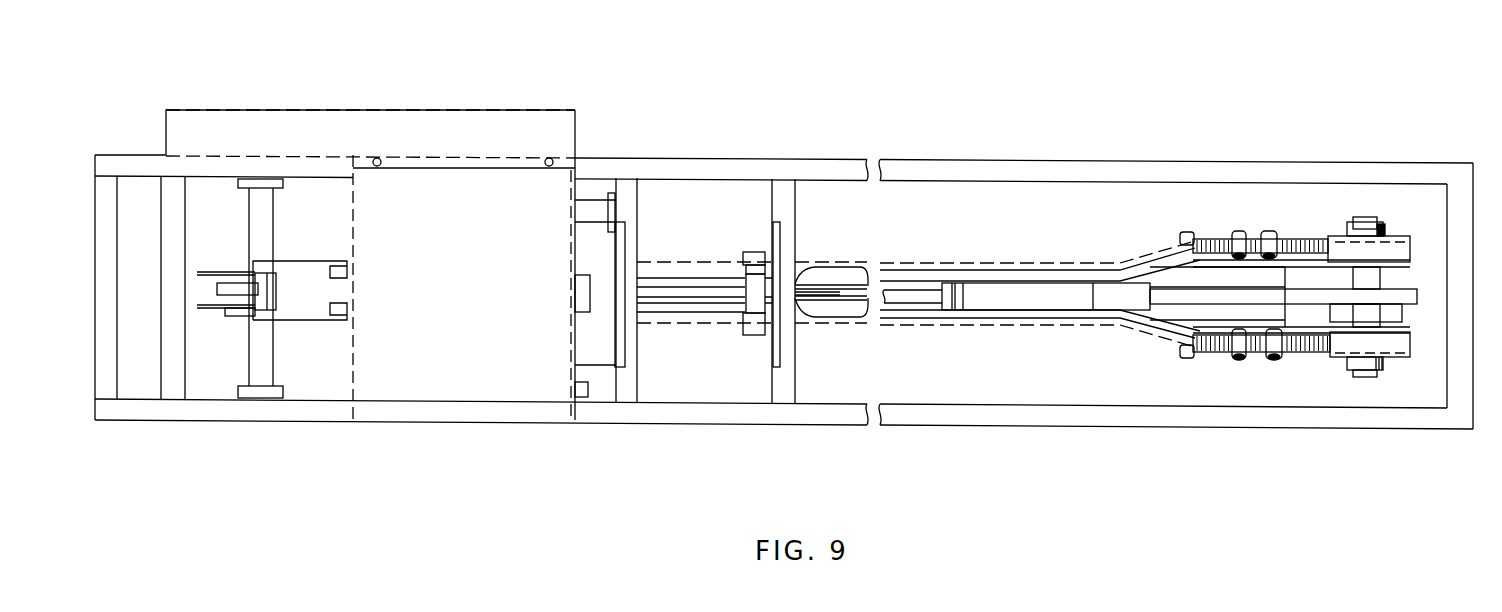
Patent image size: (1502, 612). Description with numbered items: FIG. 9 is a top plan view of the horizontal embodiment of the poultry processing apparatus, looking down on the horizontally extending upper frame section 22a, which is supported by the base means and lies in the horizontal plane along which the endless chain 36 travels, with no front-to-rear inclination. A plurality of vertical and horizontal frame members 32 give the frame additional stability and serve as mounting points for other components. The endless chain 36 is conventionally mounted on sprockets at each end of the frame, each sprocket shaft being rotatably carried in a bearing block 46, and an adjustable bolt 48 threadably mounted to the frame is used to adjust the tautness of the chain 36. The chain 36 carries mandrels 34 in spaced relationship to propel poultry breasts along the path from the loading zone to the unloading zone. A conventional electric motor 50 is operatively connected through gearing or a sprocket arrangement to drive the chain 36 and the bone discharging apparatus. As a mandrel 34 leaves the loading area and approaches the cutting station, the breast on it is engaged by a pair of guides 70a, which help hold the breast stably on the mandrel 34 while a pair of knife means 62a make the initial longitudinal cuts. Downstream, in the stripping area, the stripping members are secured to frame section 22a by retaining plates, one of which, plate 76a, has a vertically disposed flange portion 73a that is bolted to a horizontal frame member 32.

The upper frame section 22a is at (1052, 137).
The horizontal frame member 32 is at (637, 188).
The mandrel 34 is at (1081, 297).
The endless chain 36 is at (1410, 302).
The bearing block 46 is at (1397, 245).
The adjustable bolt 48 is at (1287, 238).
The electric motor 50 is at (472, 435).
The knife means 62a is at (722, 268).
The guides 70a is at (828, 308).
The vertically disposed flange portion 73a is at (615, 347).
The retaining plate 76a is at (603, 247).